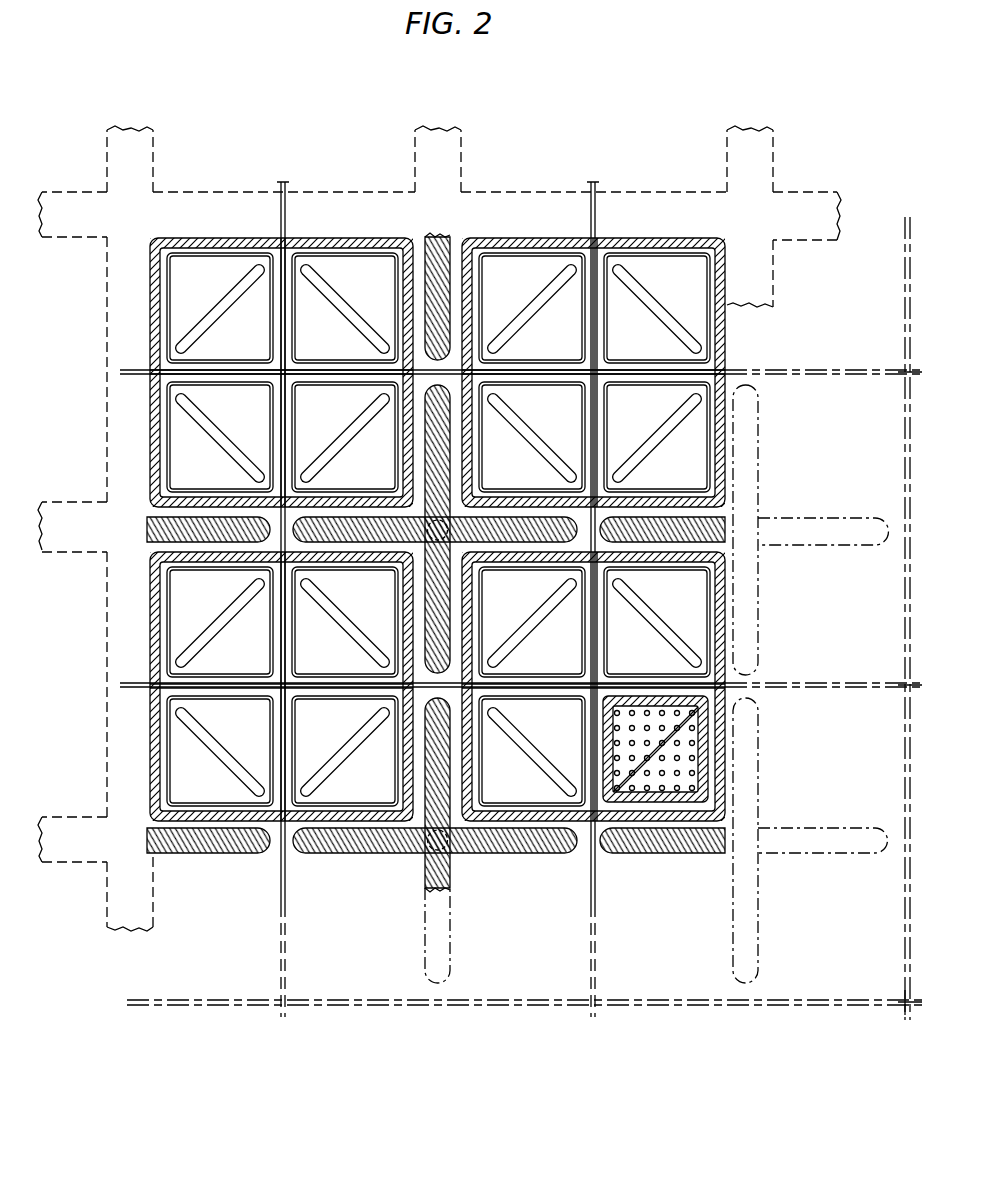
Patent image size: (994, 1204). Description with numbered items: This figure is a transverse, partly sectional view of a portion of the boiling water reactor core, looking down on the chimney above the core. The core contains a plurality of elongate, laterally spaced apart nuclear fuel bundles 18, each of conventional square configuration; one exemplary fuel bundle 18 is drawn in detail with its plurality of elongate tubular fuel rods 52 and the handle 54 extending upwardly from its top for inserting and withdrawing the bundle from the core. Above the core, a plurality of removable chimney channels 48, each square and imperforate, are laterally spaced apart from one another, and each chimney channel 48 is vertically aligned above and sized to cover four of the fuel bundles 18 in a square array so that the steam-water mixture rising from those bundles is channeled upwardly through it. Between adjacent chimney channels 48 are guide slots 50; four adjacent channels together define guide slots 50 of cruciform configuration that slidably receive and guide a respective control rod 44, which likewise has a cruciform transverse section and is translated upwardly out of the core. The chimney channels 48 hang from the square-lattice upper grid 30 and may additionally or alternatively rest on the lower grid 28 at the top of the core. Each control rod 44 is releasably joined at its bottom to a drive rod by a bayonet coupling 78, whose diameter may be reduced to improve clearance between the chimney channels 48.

The nuclear fuel bundles 18 is at (182, 763).
The lower grid 28 is at (280, 885).
The upper grid 30 is at (75, 815).
The control rods 44 is at (365, 855).
The chimney channels 48 is at (366, 237).
The guide slots 50 is at (155, 545).
The fuel rods 52 is at (690, 770).
The handle 54 is at (670, 772).
The bayonet coupling 78 is at (453, 858).